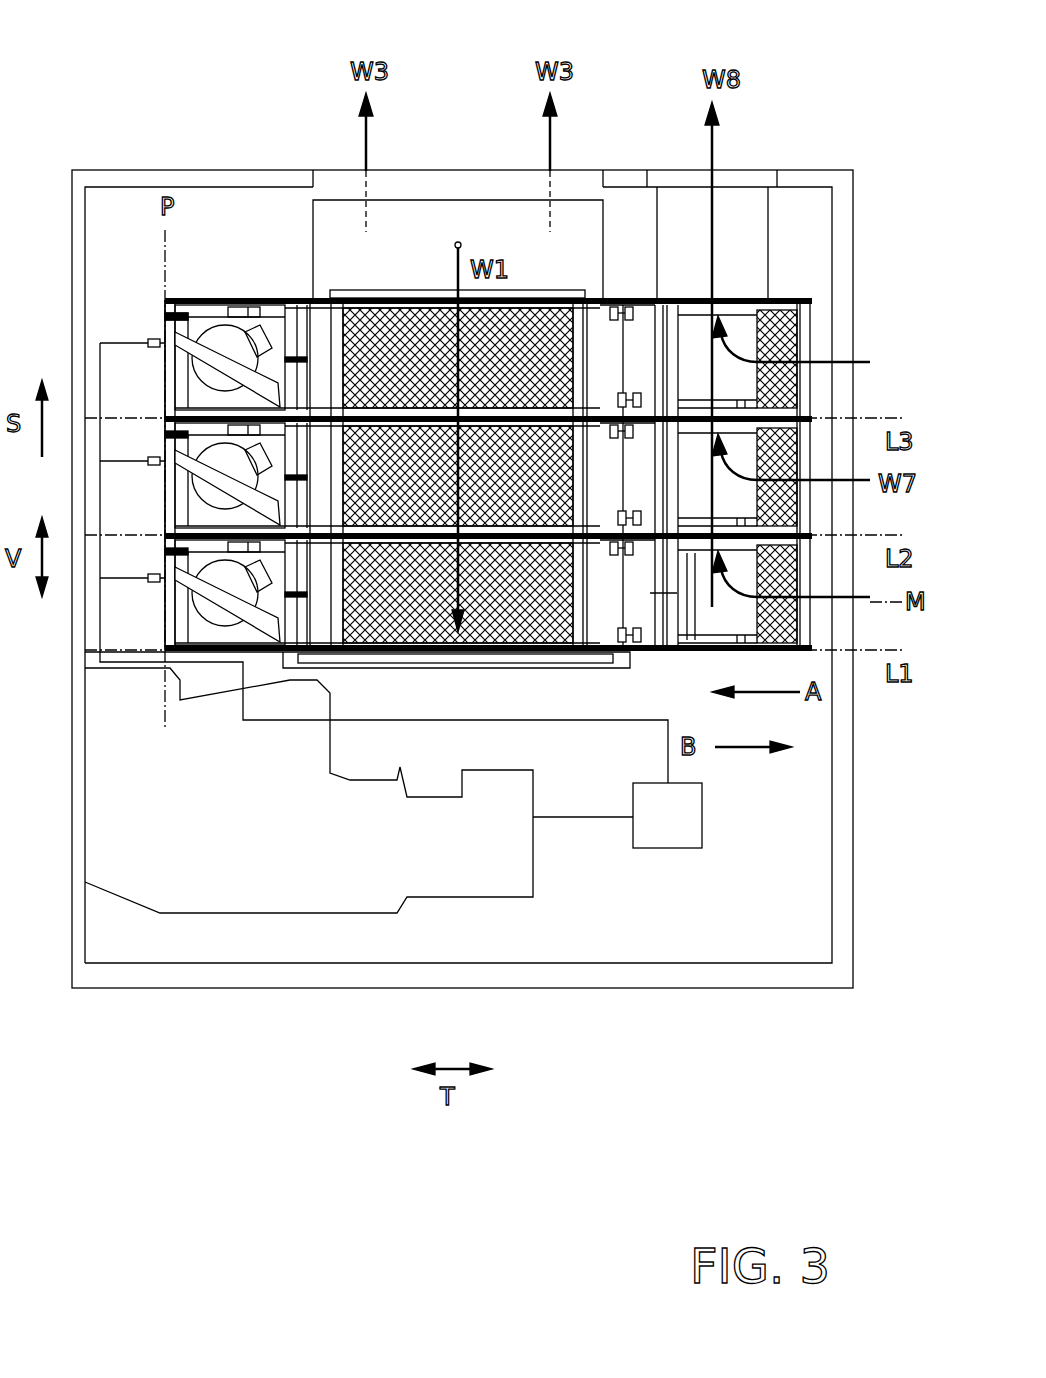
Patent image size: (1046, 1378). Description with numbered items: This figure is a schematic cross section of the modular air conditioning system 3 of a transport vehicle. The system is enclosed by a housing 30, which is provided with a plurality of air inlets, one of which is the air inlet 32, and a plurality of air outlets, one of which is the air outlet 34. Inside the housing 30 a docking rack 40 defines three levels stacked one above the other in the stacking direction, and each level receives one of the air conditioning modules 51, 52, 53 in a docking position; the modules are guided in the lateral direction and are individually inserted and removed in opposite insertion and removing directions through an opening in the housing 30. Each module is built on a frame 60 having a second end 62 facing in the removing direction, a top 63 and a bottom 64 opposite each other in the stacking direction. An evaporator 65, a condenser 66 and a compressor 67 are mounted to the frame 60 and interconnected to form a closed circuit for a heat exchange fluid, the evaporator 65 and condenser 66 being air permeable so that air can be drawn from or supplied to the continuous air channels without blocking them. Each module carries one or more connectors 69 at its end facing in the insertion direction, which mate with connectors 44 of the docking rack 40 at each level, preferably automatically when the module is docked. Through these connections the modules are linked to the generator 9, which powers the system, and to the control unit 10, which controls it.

The modular air conditioning system 3 is at (75, 85).
The generator 9 is at (252, 822).
The control unit 10 is at (678, 830).
The housing 30 is at (75, 960).
The air inlet 32 is at (845, 330).
The air outlet 34 is at (757, 182).
The docking rack 40 is at (210, 305).
The connectors 44 is at (150, 340).
The air conditioning module 51 is at (163, 602).
The air conditioning module 52 is at (170, 479).
The air conditioning module 53 is at (168, 360).
The frame 60 is at (648, 298).
The second end 62 is at (812, 378).
The top 63 is at (670, 305).
The bottom 64 is at (610, 424).
The evaporator 65 is at (383, 318).
The condenser 66 is at (783, 300).
The compressor 67 is at (232, 326).
The connectors 69 is at (158, 339).